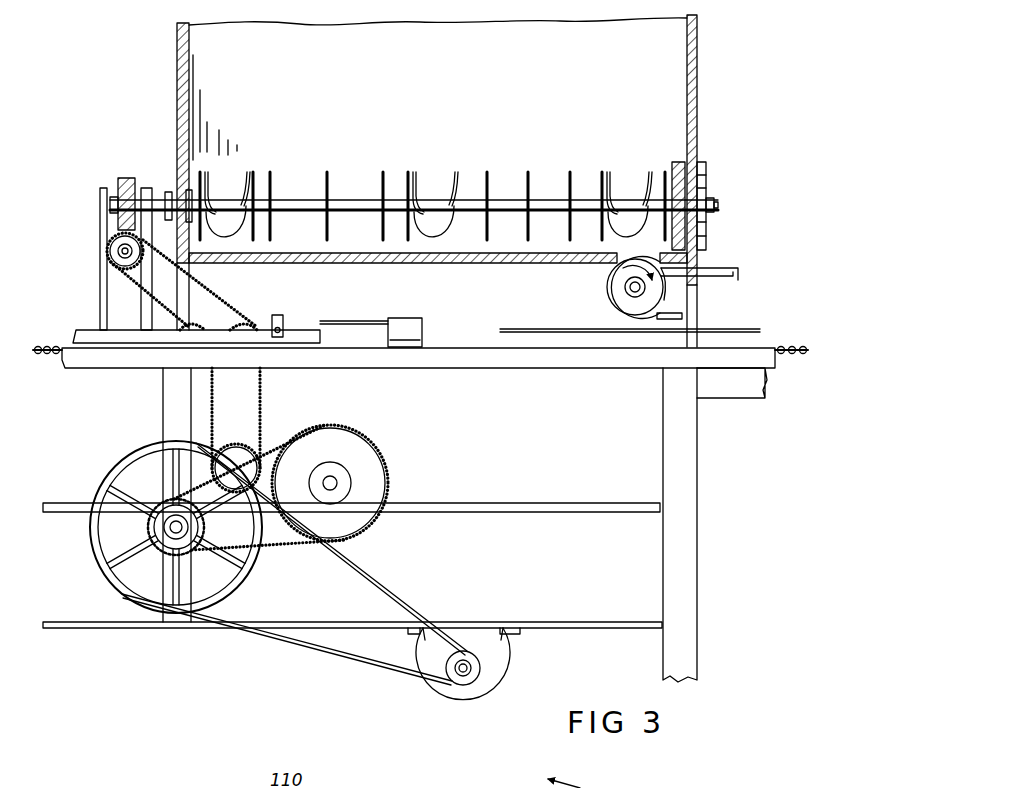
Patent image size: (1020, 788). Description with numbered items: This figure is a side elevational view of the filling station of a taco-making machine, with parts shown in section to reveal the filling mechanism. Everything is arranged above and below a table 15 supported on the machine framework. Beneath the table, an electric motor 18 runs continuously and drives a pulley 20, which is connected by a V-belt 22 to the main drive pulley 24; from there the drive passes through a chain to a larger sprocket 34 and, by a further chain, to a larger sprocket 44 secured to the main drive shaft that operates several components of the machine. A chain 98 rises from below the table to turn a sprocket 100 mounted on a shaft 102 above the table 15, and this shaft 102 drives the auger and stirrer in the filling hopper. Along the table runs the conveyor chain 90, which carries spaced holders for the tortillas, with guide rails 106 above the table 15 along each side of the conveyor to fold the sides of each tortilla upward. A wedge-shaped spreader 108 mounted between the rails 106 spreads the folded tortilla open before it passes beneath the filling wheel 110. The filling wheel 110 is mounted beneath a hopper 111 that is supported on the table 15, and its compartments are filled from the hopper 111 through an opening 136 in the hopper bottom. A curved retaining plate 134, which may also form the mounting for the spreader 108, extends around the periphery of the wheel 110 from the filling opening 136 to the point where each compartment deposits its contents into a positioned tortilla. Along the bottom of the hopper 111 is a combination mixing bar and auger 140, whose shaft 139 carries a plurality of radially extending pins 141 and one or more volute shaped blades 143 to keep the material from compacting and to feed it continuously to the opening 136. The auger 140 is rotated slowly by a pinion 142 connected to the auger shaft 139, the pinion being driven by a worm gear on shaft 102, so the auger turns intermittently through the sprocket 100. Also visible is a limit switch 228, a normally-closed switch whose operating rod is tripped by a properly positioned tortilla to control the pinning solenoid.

The table 15 is at (566, 355).
The electric motor 18 is at (481, 683).
The pulley 20 is at (462, 682).
The V-belt 22 is at (340, 646).
The main drive pulley 24 is at (250, 566).
The sprocket 34 is at (240, 452).
The sprocket 44 is at (385, 465).
The conveyor chain 90 is at (793, 347).
The chain 98 is at (256, 430).
The sprocket 100 is at (152, 277).
The shaft 102 is at (122, 249).
The guide rails 106 is at (742, 329).
The wedge-shaped spreader 108 is at (656, 318).
The filling wheel 110 is at (651, 280).
The hopper 111 is at (698, 99).
The curved retaining plate 134 is at (667, 288).
The opening 136 is at (624, 257).
The auger shaft 139 is at (345, 200).
The combination mixing bar and auger 140 is at (414, 180).
The radially extending pins 141 is at (325, 190).
The pinion 142 is at (124, 178).
The volute shaped blades 143 is at (207, 190).
The limit switch 228 is at (409, 318).